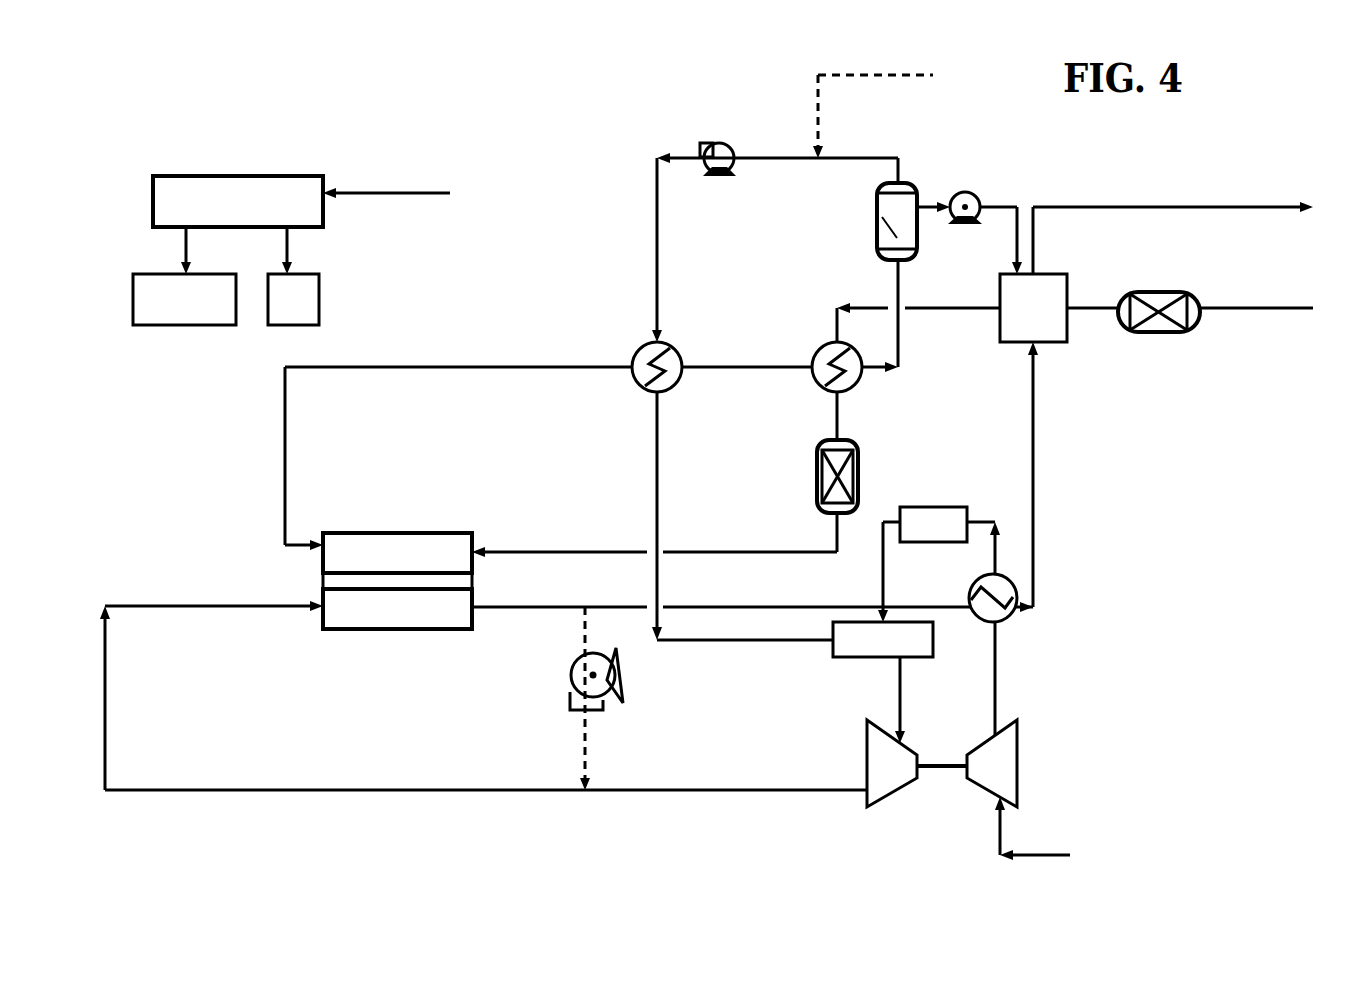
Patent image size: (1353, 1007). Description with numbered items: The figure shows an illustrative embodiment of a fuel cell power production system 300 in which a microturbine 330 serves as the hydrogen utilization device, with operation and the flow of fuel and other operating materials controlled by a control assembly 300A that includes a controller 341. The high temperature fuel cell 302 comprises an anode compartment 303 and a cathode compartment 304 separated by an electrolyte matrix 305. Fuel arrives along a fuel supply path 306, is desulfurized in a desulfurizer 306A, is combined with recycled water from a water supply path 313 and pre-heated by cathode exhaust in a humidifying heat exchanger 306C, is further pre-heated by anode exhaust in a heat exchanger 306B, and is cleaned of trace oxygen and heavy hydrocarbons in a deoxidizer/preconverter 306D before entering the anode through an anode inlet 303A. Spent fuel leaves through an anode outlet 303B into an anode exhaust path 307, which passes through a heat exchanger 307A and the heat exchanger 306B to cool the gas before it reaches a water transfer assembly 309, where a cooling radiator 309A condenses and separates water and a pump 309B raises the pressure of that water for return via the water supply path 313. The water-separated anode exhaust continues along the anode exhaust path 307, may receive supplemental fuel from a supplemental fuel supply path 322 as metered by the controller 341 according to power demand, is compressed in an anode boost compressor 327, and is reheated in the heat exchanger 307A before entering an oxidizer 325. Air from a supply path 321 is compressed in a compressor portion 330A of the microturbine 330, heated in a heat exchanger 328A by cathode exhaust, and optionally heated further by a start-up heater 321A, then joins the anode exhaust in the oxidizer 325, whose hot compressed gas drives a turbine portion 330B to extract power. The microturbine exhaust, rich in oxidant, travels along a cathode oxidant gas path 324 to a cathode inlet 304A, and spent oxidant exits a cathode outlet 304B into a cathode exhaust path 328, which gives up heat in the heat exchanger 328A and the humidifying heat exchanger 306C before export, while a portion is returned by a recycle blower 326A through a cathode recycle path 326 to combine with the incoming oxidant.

The fuel cell power production system 300 is at (600, 104).
The control assembly 300A is at (218, 126).
The controller 341 is at (252, 176).
The anode boost compressor 327 is at (720, 143).
The supplemental fuel supply path 322 is at (818, 128).
The anode exhaust path 307 is at (876, 158).
The water transfer assembly 309 is at (849, 221).
The cooling radiator 309A is at (877, 220).
The pump 309B is at (963, 192).
The water supply path 313 is at (993, 207).
The cathode exhaust path 328 is at (1090, 207).
The humidifying heat exchanger 306C is at (1052, 274).
The fuel supply path 306 is at (1218, 308).
The desulfurizer 306A is at (1152, 333).
The heat exchanger 306B is at (822, 360).
The deoxidizer/preconverter 306D is at (858, 462).
The heat exchanger 307A is at (674, 346).
The start-up heater 321A is at (925, 507).
The high temperature fuel cell 302 is at (380, 564).
The anode compartment 303 is at (420, 533).
The anode inlet 303A is at (472, 540).
The anode outlet 303B is at (322, 534).
The electrolyte matrix 305 is at (465, 583).
The cathode compartment 304 is at (383, 626).
The cathode inlet 304A is at (320, 617).
The cathode outlet 304B is at (477, 617).
The cathode oxidant gas path 324 is at (158, 607).
The cathode recycle path 326 is at (587, 641).
The recycle blower 326A is at (613, 679).
The oxidizer 325 is at (833, 650).
The heat exchanger 328A is at (1000, 615).
The microturbine 330 is at (925, 760).
The compressor portion 330A is at (1008, 760).
The turbine portion 330B is at (876, 745).
The supply path 321 is at (1000, 855).